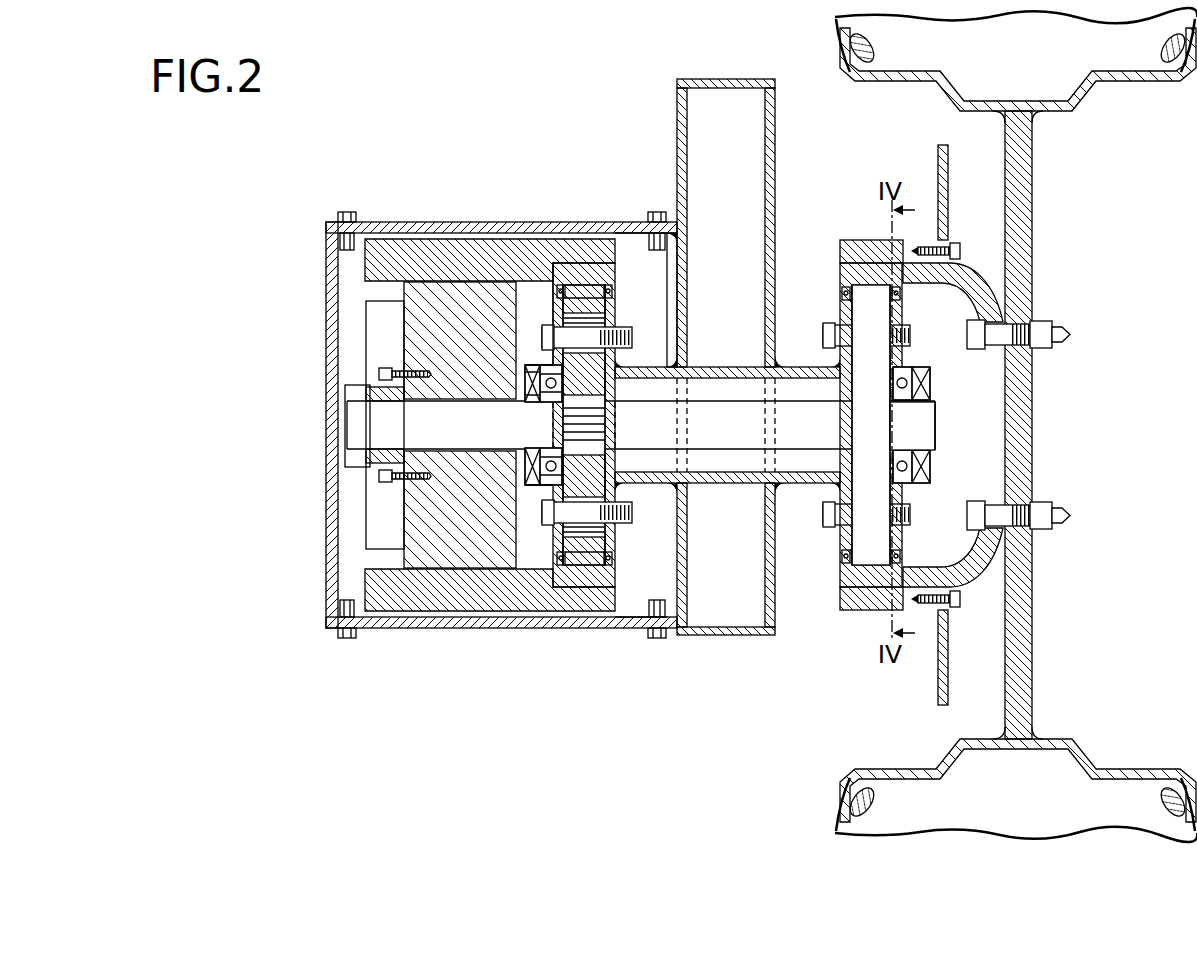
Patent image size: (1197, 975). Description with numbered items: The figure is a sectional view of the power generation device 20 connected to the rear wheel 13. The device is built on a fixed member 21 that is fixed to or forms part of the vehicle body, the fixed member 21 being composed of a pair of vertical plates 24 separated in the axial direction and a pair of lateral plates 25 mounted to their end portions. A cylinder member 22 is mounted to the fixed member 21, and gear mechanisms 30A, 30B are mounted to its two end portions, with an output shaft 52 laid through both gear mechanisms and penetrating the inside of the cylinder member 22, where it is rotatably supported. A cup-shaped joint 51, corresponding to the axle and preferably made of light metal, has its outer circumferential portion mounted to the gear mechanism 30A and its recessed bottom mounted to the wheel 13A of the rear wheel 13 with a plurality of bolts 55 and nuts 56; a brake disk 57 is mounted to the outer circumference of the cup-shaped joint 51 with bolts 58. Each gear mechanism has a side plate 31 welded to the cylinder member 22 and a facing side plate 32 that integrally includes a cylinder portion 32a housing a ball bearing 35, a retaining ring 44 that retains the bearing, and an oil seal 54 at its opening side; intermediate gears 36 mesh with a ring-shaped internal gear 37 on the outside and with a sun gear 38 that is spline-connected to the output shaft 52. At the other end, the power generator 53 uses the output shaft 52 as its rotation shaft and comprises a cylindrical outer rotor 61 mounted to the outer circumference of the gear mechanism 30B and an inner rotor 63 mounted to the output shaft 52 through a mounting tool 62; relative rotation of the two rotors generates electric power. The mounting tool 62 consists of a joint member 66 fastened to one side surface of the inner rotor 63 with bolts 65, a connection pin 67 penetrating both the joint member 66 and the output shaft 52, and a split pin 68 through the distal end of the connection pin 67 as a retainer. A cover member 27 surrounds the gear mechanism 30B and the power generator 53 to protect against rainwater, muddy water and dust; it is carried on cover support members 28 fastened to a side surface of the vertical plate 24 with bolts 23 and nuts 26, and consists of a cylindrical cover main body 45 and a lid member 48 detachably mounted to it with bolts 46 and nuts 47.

The rear wheel 13 is at (1150, 96).
The wheel 13A is at (1022, 200).
The power generation device 20 is at (465, 97).
The fixed member 21 is at (678, 92).
The cylinder member 22 is at (745, 484).
The bolt 23 is at (650, 233).
The vertical plate 24 is at (650, 590).
The lateral plate 25 is at (724, 79).
The nut 26 is at (645, 232).
The cover member 27 is at (457, 630).
The cover support member 28 is at (660, 212).
The gear mechanism 30A is at (839, 251).
The gear mechanism 30B is at (604, 263).
The side plate 31 is at (615, 262).
The side plate 32 is at (556, 262).
The cylinder portion 32a is at (507, 300).
The ball bearing 35 is at (558, 500).
The intermediate gear 36 is at (585, 566).
The internal gear 37 is at (562, 325).
The sun gear 38 is at (612, 565).
The retaining ring 44 is at (545, 486).
The cover main body 45 is at (512, 588).
The bolt 46 is at (345, 212).
The nut 47 is at (353, 238).
The lid member 48 is at (333, 590).
The cup-shaped joint 51 is at (872, 241).
The output shaft 52 is at (812, 437).
The power generator 53 is at (419, 234).
The oil seal 54 is at (503, 470).
The bolt 55 is at (1030, 333).
The nut 56 is at (1062, 333).
The brake disk 57 is at (940, 700).
The bolt 58 is at (925, 245).
The outer rotor 61 is at (463, 239).
The mounting tool 62 is at (339, 391).
The inner rotor 63 is at (404, 532).
The bolt 65 is at (392, 372).
The joint member 66 is at (380, 392).
The connection pin 67 is at (355, 436).
The split pin 68 is at (372, 467).